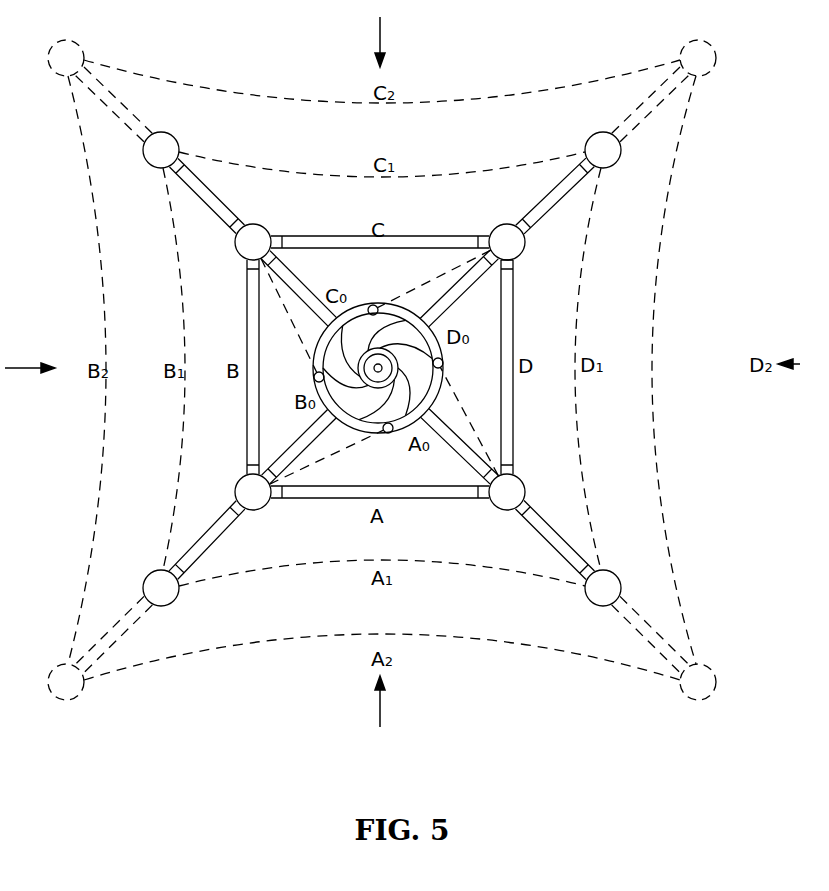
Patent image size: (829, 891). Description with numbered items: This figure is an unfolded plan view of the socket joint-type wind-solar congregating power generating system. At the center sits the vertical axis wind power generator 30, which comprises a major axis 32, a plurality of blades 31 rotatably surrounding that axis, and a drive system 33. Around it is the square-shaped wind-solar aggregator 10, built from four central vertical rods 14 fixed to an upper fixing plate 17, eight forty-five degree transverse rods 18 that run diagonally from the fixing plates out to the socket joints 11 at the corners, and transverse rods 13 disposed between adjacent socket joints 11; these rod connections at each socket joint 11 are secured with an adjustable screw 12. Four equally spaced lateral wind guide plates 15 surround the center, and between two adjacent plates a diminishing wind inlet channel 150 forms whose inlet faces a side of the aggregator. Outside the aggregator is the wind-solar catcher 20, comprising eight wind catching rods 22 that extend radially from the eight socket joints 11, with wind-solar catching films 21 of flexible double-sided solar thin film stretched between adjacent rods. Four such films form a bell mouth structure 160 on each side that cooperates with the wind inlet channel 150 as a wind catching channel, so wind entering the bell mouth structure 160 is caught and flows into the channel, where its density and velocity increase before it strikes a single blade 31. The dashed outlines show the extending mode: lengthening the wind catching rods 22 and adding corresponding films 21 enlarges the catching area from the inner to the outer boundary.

The wind-solar aggregator 10 is at (514, 367).
The socket joint 11 is at (523, 244).
The adjustable screw 12 is at (509, 262).
The transverse rod 13 is at (509, 283).
The central vertical rod 14 is at (444, 364).
The lateral wind guide plate 15 is at (445, 388).
The upper fixing plate 17 is at (420, 410).
The 45° transverse rod 18 is at (463, 450).
The wind-solar catcher 20 is at (408, 370).
The wind-solar catching film 21 is at (657, 514).
The wind catching rod 22 is at (627, 605).
The vertical axis wind power generator 30 is at (210, 367).
The blade 31 is at (340, 413).
The major axis 32 is at (374, 366).
The drive system 33 is at (376, 367).
The diminishing wind inlet channel 150 is at (393, 478).
The bell mouth structure 160 is at (427, 618).